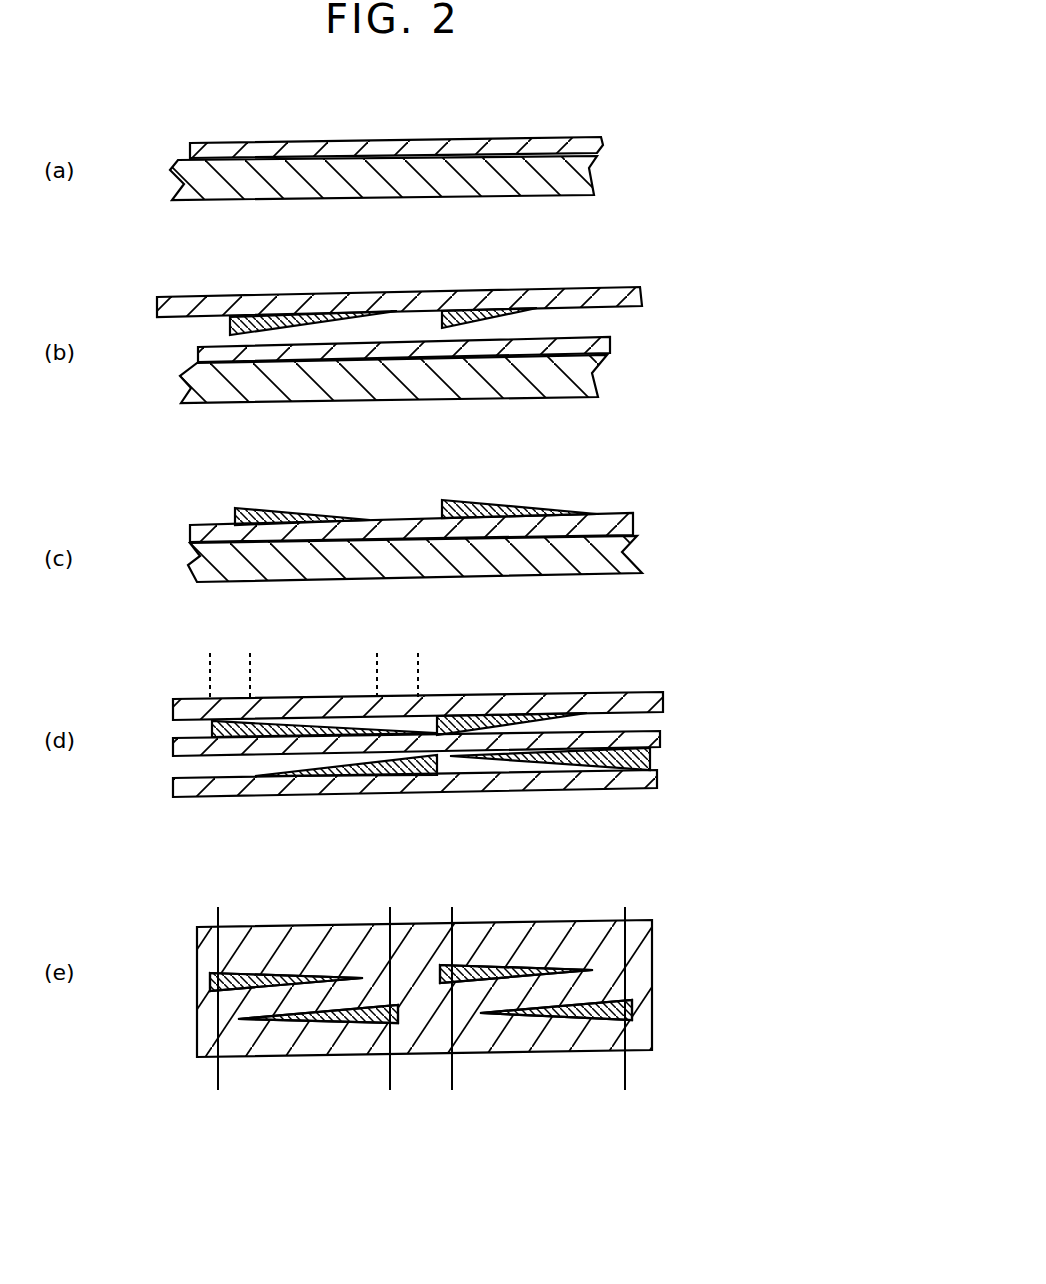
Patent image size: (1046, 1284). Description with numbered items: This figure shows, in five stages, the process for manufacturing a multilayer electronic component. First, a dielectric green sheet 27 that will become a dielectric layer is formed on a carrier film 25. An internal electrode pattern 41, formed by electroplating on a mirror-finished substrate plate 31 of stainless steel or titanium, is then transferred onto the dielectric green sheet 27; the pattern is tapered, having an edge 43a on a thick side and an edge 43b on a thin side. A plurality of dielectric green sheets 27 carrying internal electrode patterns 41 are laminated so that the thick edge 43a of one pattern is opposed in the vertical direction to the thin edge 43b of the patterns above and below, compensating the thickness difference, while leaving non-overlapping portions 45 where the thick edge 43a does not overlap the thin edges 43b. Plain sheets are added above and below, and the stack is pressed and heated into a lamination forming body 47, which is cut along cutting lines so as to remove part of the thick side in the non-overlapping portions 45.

The carrier film 25 is at (560, 168).
The dielectric green sheet 27 is at (550, 145).
The substrate plate 31 is at (632, 284).
The internal electrode pattern 41 is at (313, 310).
The edge on a thick side 43a is at (437, 728).
The edge on a thin side 43b is at (622, 727).
The non-overlapping portions 45 is at (314, 668).
The lamination forming body 47 is at (646, 921).